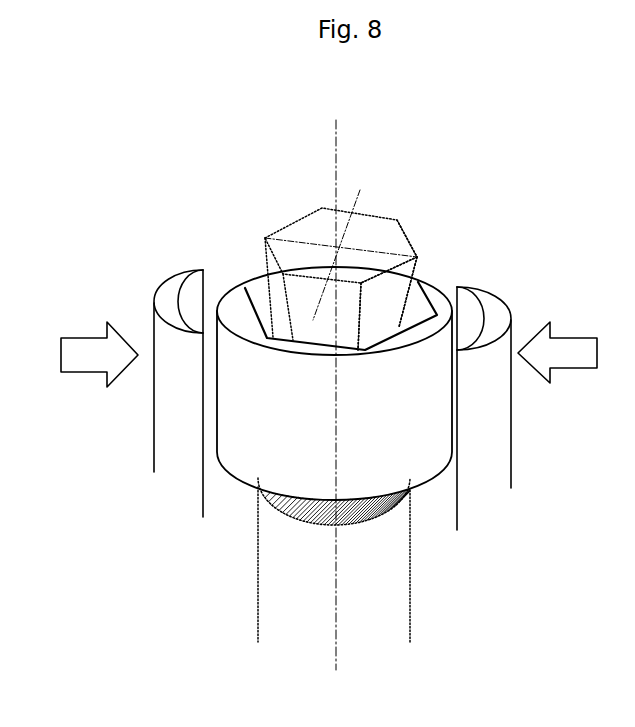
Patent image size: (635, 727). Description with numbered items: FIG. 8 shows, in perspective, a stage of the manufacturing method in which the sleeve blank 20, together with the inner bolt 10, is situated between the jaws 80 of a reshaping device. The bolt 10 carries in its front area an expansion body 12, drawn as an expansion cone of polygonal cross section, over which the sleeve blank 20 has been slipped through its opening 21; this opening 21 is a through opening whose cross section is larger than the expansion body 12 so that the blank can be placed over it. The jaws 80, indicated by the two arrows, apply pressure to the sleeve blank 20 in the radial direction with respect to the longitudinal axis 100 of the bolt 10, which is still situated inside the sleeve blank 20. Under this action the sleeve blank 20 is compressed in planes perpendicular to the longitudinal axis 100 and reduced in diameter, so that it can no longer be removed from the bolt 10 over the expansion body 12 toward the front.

The bolt 10 is at (305, 320).
The expansion body 12 is at (403, 276).
The sleeve blank 20 is at (312, 428).
The opening 21 is at (262, 298).
The jaws 80 is at (173, 395).
The longitudinal axis 100 is at (340, 585).